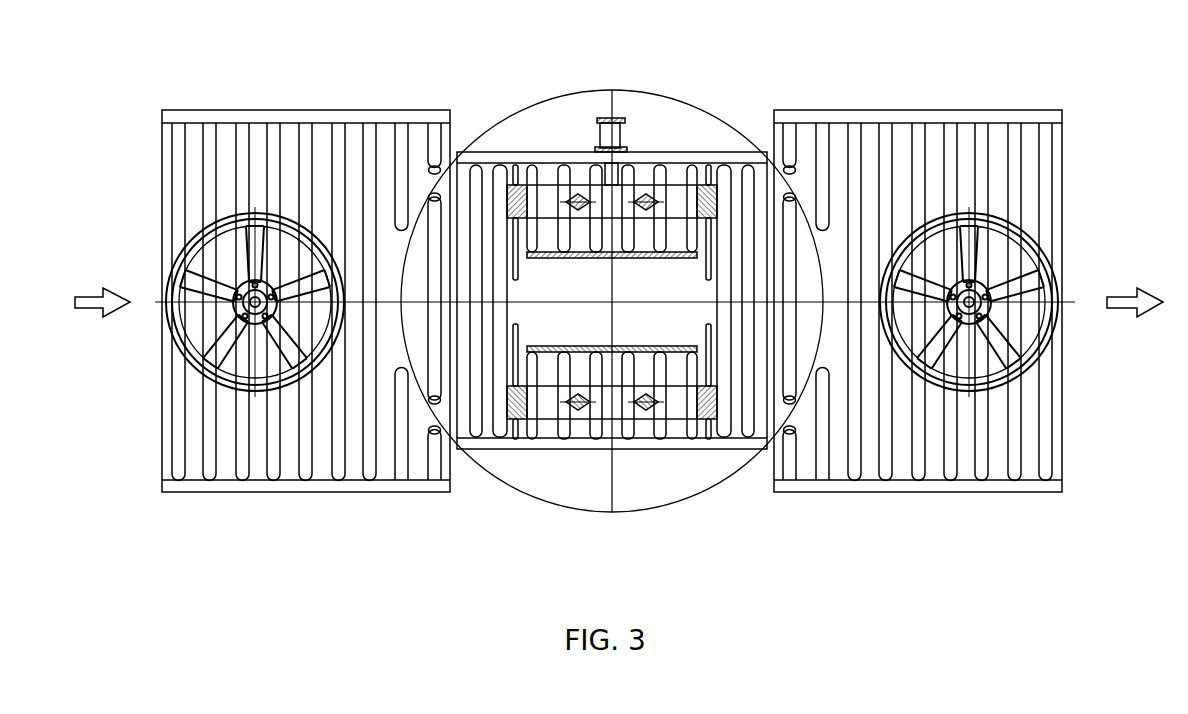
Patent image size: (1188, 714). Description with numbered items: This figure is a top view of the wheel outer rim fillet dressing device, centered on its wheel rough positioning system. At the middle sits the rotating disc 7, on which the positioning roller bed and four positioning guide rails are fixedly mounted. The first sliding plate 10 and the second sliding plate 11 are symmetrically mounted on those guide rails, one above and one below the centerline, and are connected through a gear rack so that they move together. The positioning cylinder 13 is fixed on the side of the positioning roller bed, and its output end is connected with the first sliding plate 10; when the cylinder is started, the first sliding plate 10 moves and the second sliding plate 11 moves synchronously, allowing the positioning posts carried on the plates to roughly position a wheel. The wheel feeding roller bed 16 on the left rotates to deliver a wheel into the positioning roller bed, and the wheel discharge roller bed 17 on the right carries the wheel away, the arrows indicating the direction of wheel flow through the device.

The rotating disc 7 is at (612, 304).
The first sliding plate 10 is at (678, 198).
The second sliding plate 11 is at (678, 403).
The positioning cylinder 13 is at (603, 130).
The wheel feeding roller bed 16 is at (322, 148).
The wheel discharge roller bed 17 is at (965, 150).